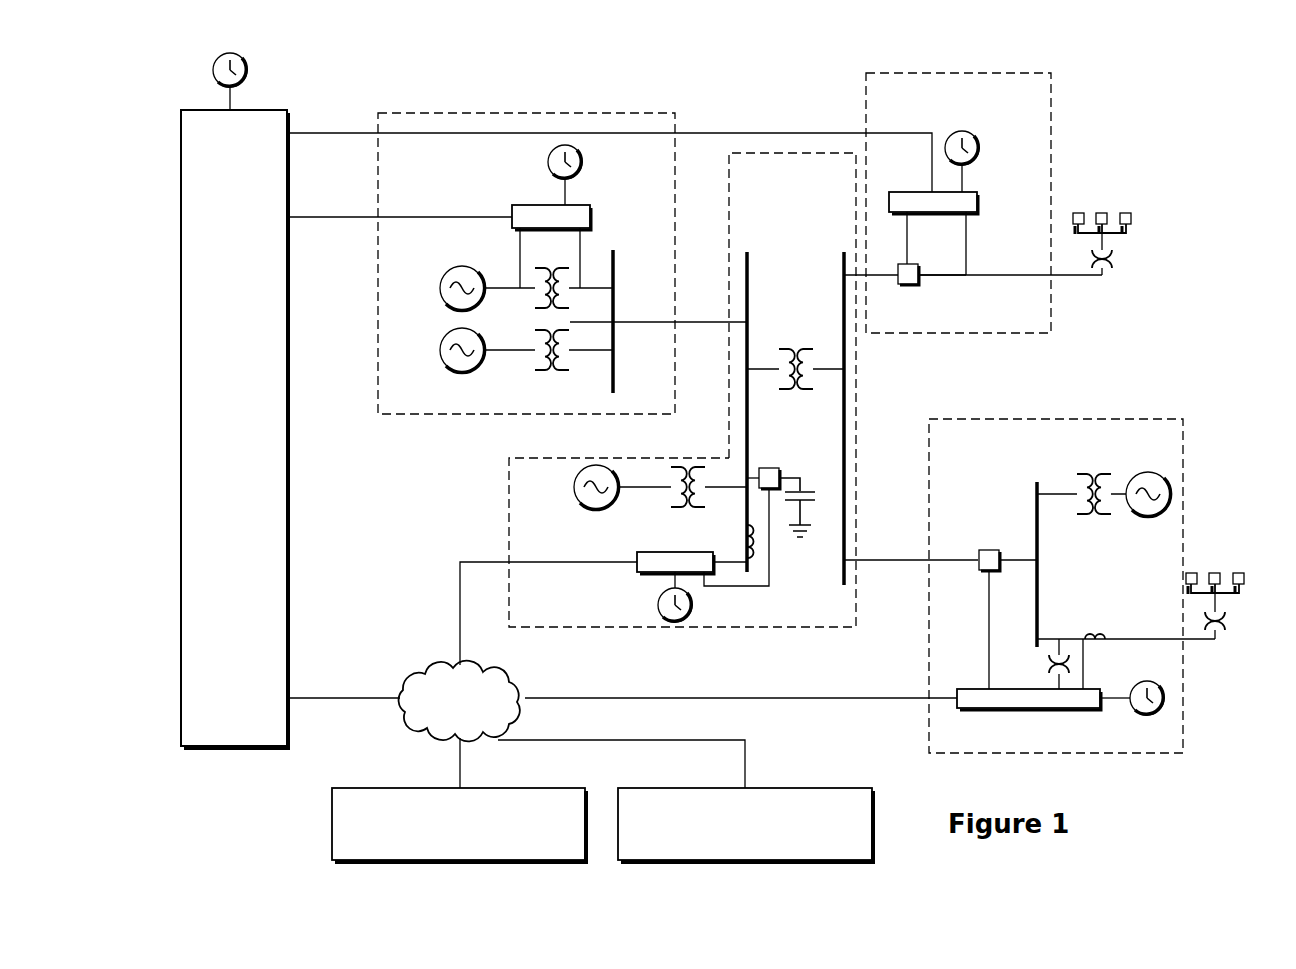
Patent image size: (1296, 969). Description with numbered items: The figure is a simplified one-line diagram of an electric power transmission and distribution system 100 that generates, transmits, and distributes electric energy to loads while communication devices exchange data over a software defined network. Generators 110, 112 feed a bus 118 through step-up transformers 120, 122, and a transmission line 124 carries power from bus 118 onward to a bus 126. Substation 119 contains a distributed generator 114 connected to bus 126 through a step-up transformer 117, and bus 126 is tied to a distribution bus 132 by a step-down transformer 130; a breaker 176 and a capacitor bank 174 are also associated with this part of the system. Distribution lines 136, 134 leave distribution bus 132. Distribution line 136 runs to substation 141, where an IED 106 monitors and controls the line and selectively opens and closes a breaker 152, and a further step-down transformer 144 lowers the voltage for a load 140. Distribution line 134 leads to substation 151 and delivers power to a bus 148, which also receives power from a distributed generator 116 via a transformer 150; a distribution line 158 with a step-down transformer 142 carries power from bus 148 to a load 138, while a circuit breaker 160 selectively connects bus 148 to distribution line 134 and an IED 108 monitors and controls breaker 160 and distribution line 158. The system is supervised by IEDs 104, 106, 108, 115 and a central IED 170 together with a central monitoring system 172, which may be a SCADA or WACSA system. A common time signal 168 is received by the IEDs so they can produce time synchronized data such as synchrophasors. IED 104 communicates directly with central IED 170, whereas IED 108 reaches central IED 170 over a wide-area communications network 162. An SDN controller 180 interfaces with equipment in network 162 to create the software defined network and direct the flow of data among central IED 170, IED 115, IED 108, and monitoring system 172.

The electric power delivery system 100 is at (1172, 128).
The IED 104 is at (530, 204).
The IED 106 is at (894, 192).
The IED 108 is at (1070, 709).
The generator 110 is at (440, 287).
The generator 112 is at (440, 349).
The generator 114 is at (574, 489).
The IED 115 is at (700, 552).
The distributed generator 116 is at (1138, 514).
The step-up transformer 117 is at (672, 502).
The bus 118 is at (616, 375).
The substation 119 is at (624, 628).
The step-up transformer 120 is at (526, 304).
The step-up transformer 122 is at (551, 372).
The transmission line 124 is at (690, 324).
The bus 126 is at (750, 398).
The step-down transformer 130 is at (796, 349).
The distribution bus 132 is at (842, 550).
The distribution line 134 is at (940, 562).
The distribution line 136 is at (888, 283).
The load 138 is at (1215, 564).
The load 140 is at (1132, 219).
The substation 141 is at (1025, 334).
The step-down transformer 142 is at (1224, 623).
The step-down transformer 144 is at (1112, 257).
The bus 148 is at (1034, 486).
The transformer 150 is at (1090, 474).
The substation 151 is at (1120, 754).
The breaker 152 is at (918, 284).
The distribution line 158 is at (1118, 630).
The circuit breaker 160 is at (984, 550).
The communications network 162 is at (459, 701).
The common time signal 168 is at (248, 67).
The central IED 170 is at (234, 429).
The central monitoring system 172 is at (459, 825).
The capacitor bank 174 is at (806, 490).
The breaker 176 is at (768, 468).
The SDN controller 180 is at (745, 825).